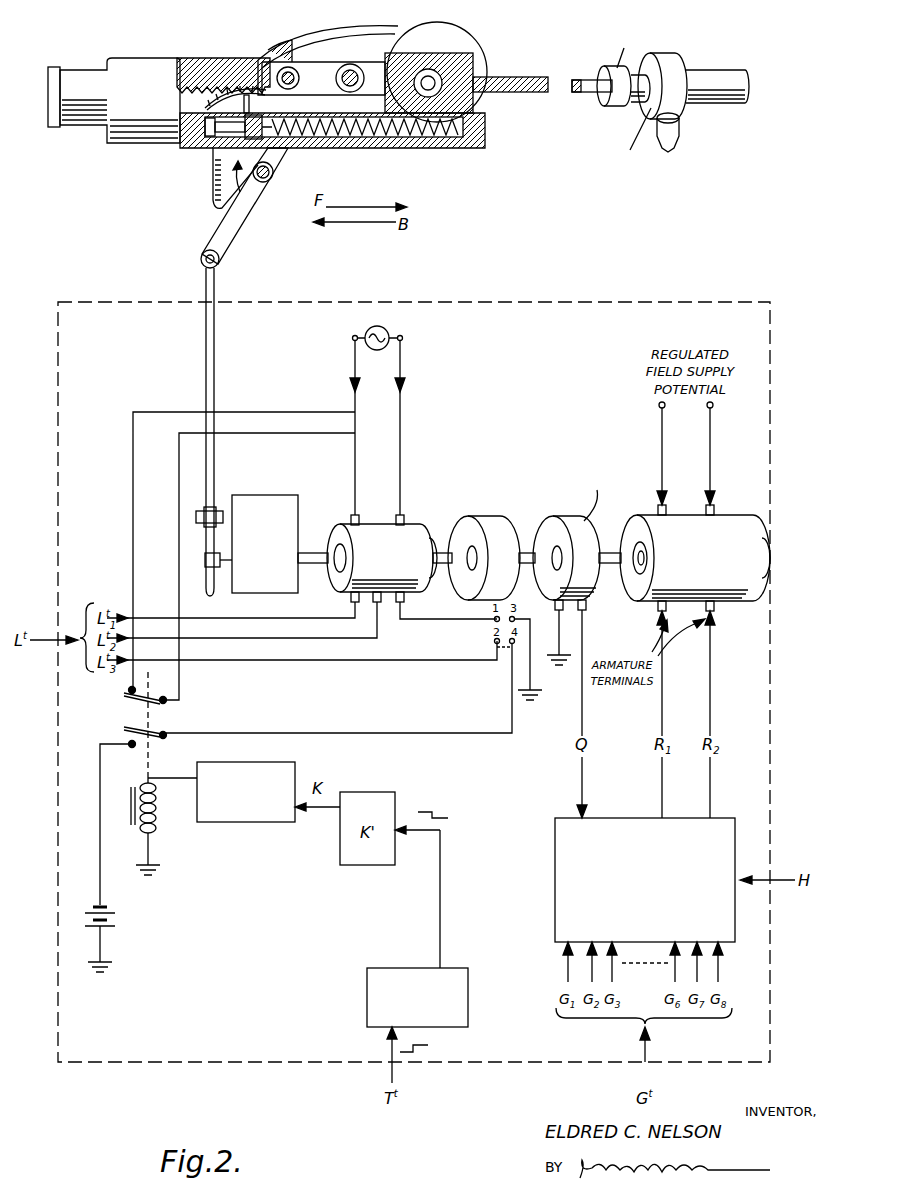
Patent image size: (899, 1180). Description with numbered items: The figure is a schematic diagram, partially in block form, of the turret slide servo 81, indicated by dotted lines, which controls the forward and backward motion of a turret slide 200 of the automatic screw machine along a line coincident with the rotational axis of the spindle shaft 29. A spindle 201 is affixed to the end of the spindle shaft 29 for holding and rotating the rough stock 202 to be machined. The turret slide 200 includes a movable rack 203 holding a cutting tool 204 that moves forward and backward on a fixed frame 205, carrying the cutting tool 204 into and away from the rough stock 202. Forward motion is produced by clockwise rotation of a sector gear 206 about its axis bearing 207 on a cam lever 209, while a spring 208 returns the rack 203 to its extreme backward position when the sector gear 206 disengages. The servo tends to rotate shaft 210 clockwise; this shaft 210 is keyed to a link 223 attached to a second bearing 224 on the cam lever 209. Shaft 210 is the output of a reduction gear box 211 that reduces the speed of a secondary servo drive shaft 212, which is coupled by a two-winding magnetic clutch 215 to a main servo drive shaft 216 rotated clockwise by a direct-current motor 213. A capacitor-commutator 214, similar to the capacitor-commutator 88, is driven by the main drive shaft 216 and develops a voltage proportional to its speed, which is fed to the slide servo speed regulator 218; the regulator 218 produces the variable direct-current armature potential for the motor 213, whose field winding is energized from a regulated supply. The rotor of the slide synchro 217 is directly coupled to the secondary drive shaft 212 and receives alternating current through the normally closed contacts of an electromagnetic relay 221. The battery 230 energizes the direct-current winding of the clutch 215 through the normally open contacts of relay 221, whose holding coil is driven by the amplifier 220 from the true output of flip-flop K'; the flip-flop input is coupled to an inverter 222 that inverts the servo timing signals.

The turret slide servo 81 is at (625, 302).
The capacitor-commutator 88 is at (677, 60).
The spindle shaft 29 is at (640, 100).
The turret slide 200 is at (446, 188).
The spindle 201 is at (606, 70).
The rough stock 202 is at (590, 92).
The movable rack 203 is at (366, 46).
The cutting tool 204 is at (531, 93).
The fixed frame 205 is at (486, 140).
The sector gear 206 is at (238, 100).
The axis bearing 207 is at (275, 172).
The spring 208 is at (382, 137).
The cam lever 209 is at (214, 203).
The shaft 210 is at (238, 572).
The reduction gear box 211 is at (279, 500).
The secondary servo drive shaft 212 is at (323, 566).
The direct-current motor 213 is at (725, 522).
The capacitor-commutator 214 is at (591, 598).
The two-winding magnetic clutch 215 is at (505, 522).
The main servo drive shaft 216 is at (555, 535).
The slide synchro 217 is at (414, 536).
The slide servo speed regulator 218 is at (565, 921).
The amplifier 220 is at (265, 823).
The electromagnetic relay 221 is at (170, 832).
The inverter 222 is at (470, 1020).
The link 223 is at (216, 355).
The second bearing 224 is at (221, 262).
The battery 230 is at (118, 918).